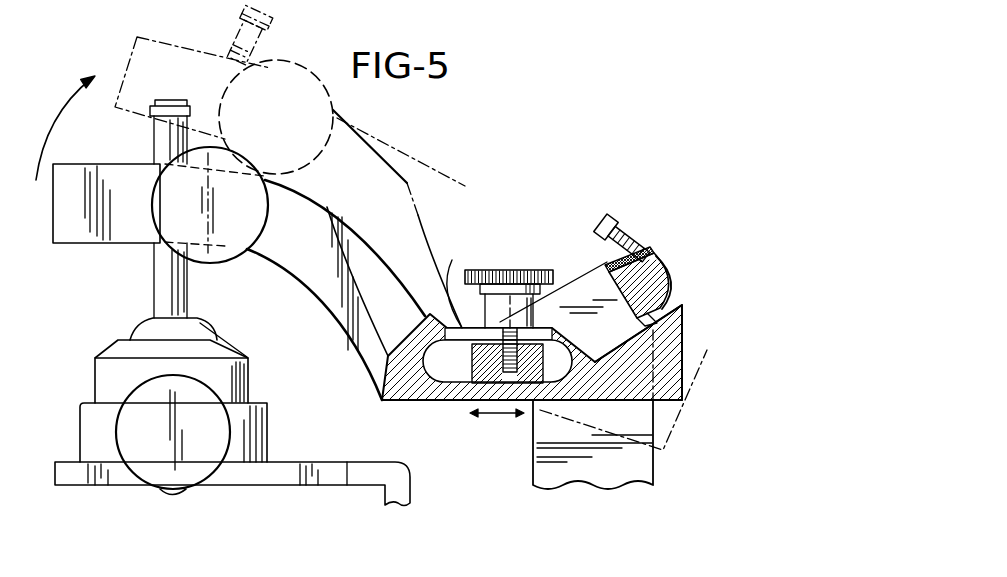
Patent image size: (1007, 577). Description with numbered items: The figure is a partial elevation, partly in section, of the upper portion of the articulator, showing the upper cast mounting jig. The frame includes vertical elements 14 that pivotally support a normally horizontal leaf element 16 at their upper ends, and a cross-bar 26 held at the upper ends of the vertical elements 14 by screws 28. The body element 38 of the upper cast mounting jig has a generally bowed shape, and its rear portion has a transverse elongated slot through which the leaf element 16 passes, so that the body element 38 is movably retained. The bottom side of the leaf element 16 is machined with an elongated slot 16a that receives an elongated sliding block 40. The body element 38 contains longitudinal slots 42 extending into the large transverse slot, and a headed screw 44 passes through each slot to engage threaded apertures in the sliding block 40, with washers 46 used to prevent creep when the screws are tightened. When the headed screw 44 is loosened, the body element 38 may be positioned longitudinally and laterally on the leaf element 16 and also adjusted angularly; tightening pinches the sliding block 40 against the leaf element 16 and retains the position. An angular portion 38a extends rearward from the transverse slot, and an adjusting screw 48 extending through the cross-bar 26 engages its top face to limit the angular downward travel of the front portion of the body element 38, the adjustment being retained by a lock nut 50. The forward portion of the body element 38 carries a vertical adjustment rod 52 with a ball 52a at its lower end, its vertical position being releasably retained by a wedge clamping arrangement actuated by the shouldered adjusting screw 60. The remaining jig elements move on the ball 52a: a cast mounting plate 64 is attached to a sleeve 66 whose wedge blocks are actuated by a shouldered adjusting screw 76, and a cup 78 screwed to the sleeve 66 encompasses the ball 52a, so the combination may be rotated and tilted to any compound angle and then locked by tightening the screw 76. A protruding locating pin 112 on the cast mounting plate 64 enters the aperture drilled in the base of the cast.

The vertical elements 14 is at (655, 470).
The leaf element 16 is at (510, 336).
The elongated slot 16a is at (460, 352).
The cross-bar 26 is at (668, 285).
The screws 28 is at (655, 262).
The body element 38 is at (380, 268).
The angular portion 38a is at (682, 342).
The sliding block 40 is at (545, 385).
The longitudinal slots 42 is at (455, 279).
The headed screw 44 is at (505, 268).
The washers 46 is at (548, 325).
The adjusting screw 48 is at (612, 218).
The lock nut 50 is at (642, 258).
The vertical adjustment rod 52 is at (232, 28).
The ball 52a is at (157, 330).
The shouldered adjusting screw 60 is at (313, 68).
The cast mounting plate 64 is at (67, 461).
The sleeve 66 is at (78, 423).
The shouldered adjusting screw 76 is at (153, 463).
The cup 78 is at (107, 348).
The locating pin 112 is at (190, 494).